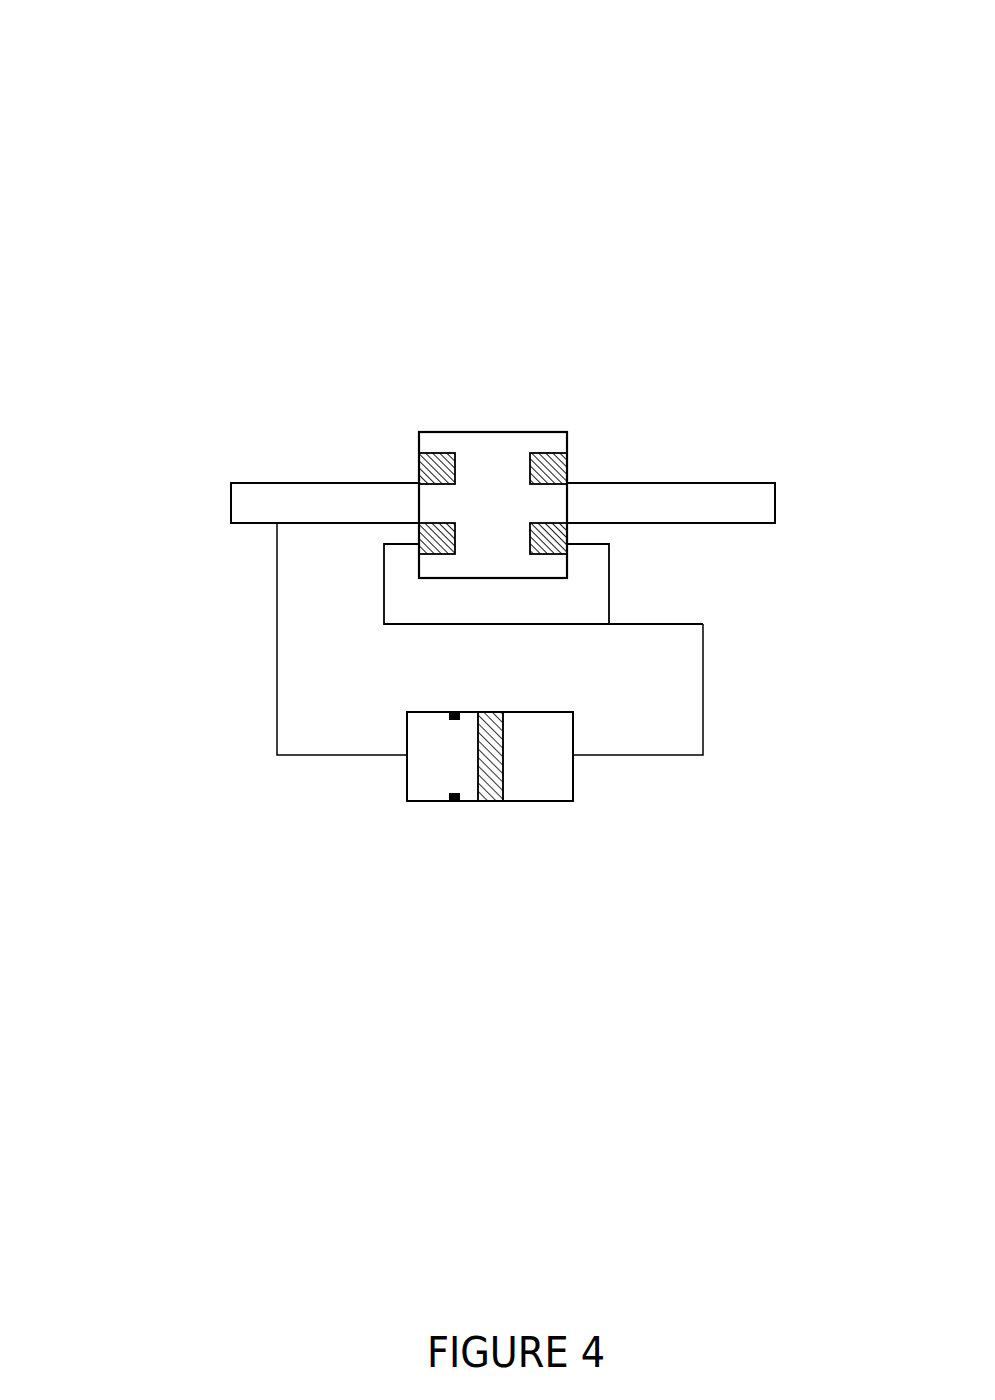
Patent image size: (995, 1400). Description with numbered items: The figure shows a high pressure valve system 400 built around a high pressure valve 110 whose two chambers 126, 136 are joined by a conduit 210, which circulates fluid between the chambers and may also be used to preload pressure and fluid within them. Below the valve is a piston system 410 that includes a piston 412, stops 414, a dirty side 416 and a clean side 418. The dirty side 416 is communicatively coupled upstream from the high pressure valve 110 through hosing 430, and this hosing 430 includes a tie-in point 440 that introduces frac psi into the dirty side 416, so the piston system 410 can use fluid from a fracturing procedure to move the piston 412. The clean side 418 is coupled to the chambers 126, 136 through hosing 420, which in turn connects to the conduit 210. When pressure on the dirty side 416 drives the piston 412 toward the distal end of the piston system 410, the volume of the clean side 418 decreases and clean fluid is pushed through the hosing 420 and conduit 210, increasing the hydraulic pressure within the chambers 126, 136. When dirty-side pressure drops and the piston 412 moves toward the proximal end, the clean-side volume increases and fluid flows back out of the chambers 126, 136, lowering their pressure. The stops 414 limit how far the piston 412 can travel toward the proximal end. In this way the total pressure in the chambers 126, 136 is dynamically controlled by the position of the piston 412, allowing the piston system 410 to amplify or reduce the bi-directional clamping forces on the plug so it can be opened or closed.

The high pressure valve system 400 is at (145, 150).
The high pressure valve 110 is at (505, 457).
The chamber 126 is at (419, 522).
The chamber 136 is at (567, 527).
The conduit 210 is at (497, 624).
The tie-in point 440 is at (270, 527).
The hosing 430 is at (265, 712).
The hosing 420 is at (710, 678).
The piston system 410 is at (445, 710).
The dirty side 416 is at (445, 767).
The clean side 418 is at (535, 753).
The piston 412 is at (488, 801).
The stops 414 is at (450, 801).